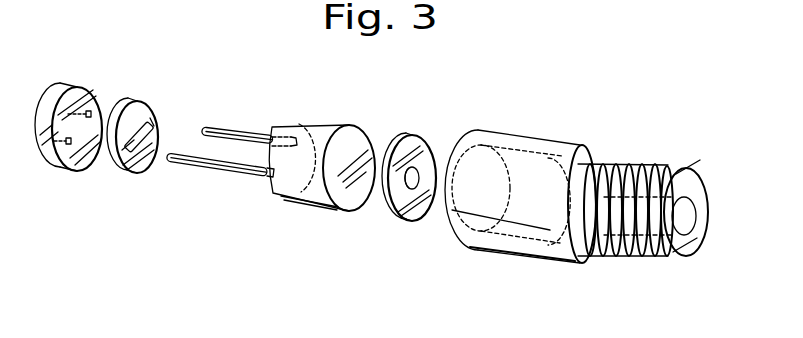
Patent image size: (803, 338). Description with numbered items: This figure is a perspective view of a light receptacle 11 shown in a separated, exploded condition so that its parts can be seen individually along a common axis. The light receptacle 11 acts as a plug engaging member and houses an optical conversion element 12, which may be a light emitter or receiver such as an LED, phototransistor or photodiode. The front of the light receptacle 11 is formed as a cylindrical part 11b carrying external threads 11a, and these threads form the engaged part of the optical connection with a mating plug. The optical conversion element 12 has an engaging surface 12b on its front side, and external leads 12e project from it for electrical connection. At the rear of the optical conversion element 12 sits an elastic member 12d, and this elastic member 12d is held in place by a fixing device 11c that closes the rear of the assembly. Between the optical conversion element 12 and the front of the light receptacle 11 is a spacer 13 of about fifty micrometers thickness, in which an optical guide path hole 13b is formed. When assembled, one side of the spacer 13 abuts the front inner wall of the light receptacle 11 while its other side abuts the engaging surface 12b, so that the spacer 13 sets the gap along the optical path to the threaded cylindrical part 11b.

The light receptacle 11 is at (576, 201).
The external threads 11a is at (636, 162).
The cylindrical part 11b is at (681, 250).
The fixing device 11c is at (65, 88).
The optical conversion element 12 is at (322, 141).
The engaging surface 12b is at (356, 146).
The elastic member 12d is at (132, 100).
The external lead 12e is at (190, 172).
The spacer 13 is at (398, 175).
The optical guide path hole 13b is at (402, 222).